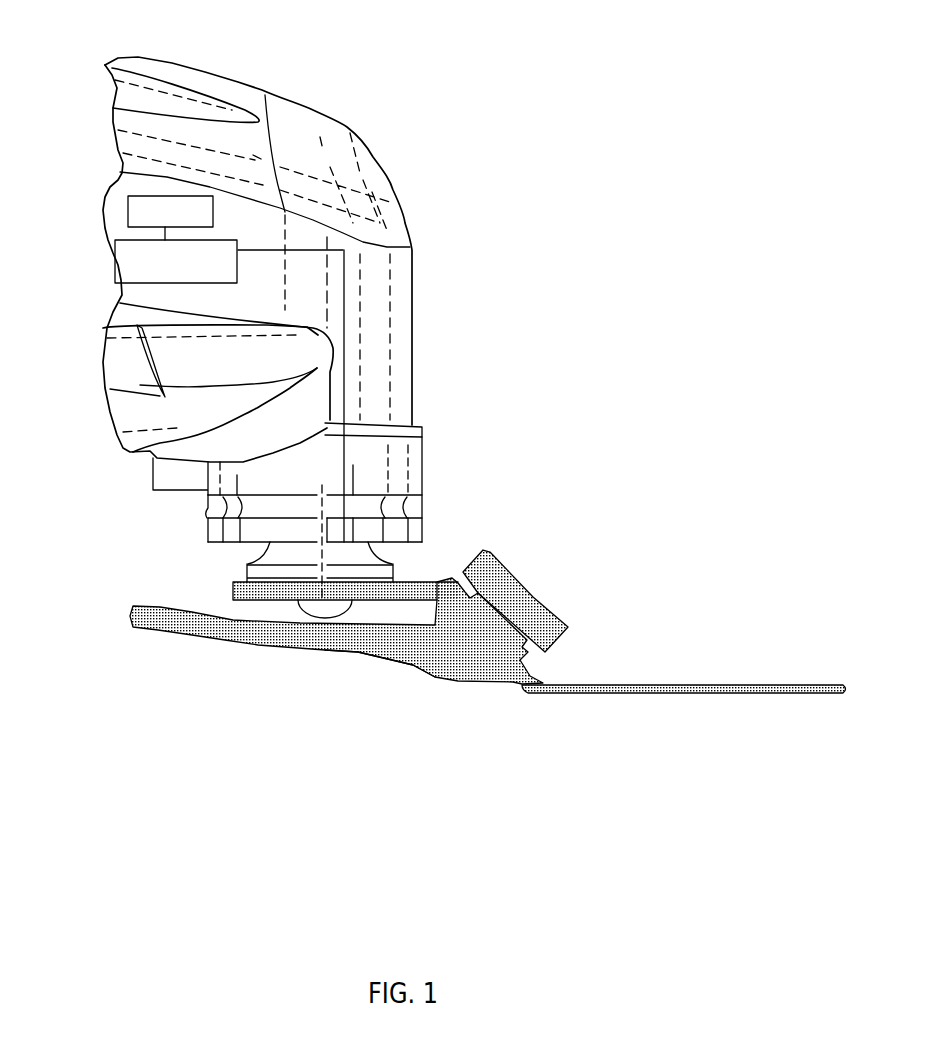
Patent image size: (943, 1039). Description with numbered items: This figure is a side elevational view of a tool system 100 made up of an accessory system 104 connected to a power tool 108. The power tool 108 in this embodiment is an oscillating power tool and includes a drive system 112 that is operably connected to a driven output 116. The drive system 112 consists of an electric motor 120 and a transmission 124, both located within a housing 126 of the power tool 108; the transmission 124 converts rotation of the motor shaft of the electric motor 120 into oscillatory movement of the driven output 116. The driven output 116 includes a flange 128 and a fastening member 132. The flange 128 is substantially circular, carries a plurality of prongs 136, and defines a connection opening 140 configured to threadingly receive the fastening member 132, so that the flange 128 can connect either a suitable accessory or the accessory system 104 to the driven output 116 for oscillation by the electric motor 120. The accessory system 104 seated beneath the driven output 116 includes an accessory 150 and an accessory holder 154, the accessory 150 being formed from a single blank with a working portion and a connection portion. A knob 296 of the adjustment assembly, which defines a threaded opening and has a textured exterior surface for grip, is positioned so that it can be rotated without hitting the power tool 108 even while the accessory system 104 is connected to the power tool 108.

The tool system 100 is at (623, 146).
The accessory system 104 is at (645, 559).
The power tool 108 is at (252, 88).
The drive system 112 is at (112, 200).
The driven output 116 is at (416, 558).
The electric motor 120 is at (147, 197).
The transmission 124 is at (142, 277).
The housing 126 is at (417, 319).
The flange 128 is at (246, 572).
The fastening member 132 is at (307, 618).
The prongs 136 is at (242, 610).
The connection opening 140 is at (291, 489).
The accessory 150 is at (637, 697).
The accessory holder 154 is at (406, 652).
The knob 296 is at (488, 550).